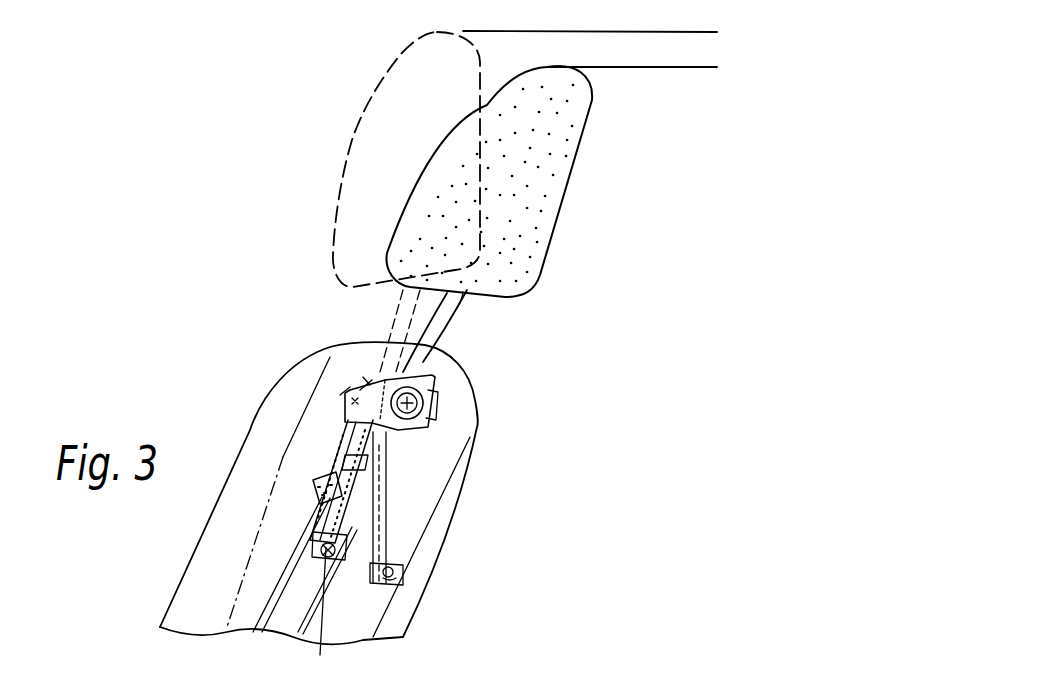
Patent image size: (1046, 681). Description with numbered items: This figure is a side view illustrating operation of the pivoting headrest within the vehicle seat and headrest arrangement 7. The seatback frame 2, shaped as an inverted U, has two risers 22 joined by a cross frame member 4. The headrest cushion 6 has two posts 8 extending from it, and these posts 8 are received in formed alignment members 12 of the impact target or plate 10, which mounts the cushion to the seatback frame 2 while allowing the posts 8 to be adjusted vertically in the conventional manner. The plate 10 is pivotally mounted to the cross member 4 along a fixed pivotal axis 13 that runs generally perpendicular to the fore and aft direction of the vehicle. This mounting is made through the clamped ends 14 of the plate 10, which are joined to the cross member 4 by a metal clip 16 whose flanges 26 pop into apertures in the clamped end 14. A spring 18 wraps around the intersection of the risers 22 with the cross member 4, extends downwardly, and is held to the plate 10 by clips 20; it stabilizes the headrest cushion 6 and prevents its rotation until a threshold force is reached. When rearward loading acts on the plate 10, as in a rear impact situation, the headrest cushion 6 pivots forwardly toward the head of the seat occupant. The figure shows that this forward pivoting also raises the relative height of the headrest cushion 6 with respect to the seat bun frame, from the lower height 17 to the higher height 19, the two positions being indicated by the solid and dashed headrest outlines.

The seatback frame 2 is at (277, 583).
The cross frame member 4 is at (437, 396).
The headrest cushion 6 is at (373, 103).
The vehicle seat and headrest arrangement 7 is at (573, 318).
The posts 8 is at (413, 302).
The impact target or plate 10 is at (365, 537).
The alignment members 12 is at (342, 468).
The fixed pivotal axis 13 is at (433, 418).
The clamped ends 14 is at (363, 377).
The metal clip 16 is at (443, 372).
The headrest height before pivoting 17 is at (697, 67).
The spring 18 is at (383, 590).
The headrest height after pivoting 19 is at (637, 31).
The clips 20 is at (393, 562).
The risers 22 is at (284, 614).
The flanges 26 is at (383, 337).